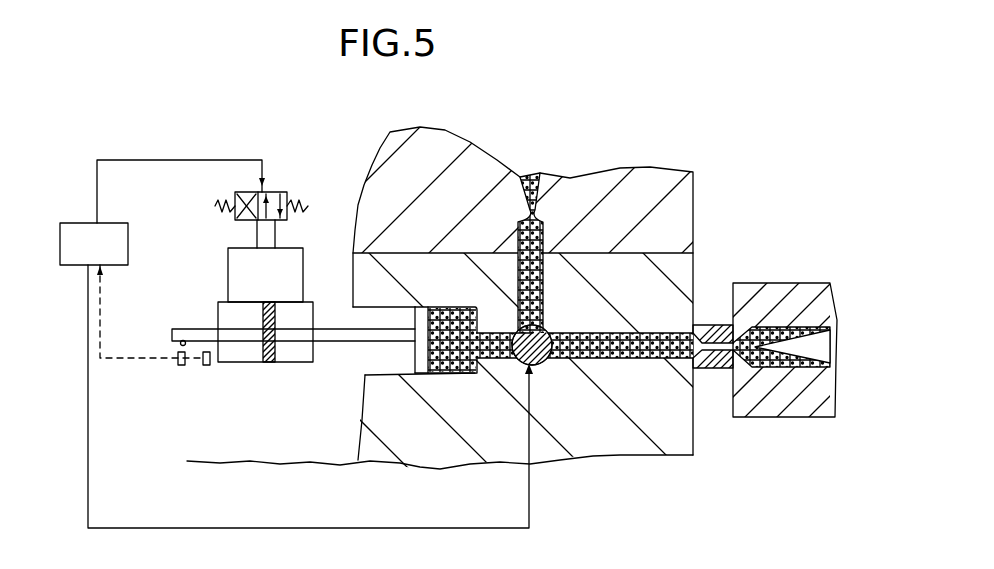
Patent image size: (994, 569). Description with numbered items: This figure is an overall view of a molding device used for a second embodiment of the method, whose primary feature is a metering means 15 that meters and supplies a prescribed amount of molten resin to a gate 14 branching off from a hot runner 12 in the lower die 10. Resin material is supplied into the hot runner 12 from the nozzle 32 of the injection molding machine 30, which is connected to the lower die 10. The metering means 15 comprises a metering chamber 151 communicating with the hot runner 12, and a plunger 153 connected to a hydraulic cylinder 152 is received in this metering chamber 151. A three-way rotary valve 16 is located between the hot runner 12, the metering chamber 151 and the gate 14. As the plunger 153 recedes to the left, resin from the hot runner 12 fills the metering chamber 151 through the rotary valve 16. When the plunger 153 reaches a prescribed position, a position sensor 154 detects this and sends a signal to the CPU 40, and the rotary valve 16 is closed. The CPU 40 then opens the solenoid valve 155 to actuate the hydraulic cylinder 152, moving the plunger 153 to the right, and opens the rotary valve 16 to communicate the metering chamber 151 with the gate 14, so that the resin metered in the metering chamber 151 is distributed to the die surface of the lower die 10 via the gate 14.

The lower die 10 is at (632, 205).
The hot runner 12 is at (643, 350).
The gate 14 is at (520, 272).
The metering means 15 is at (460, 381).
The three-way rotary valve 16 is at (543, 367).
The injection molding machine 30 is at (795, 297).
The nozzle 32 is at (705, 366).
The CPU 40 is at (73, 258).
The metering chamber 151 is at (447, 347).
The hydraulic cylinder 152 is at (261, 372).
The plunger 153 is at (342, 337).
The position sensor 154 is at (205, 367).
The solenoid valve 155 is at (273, 192).